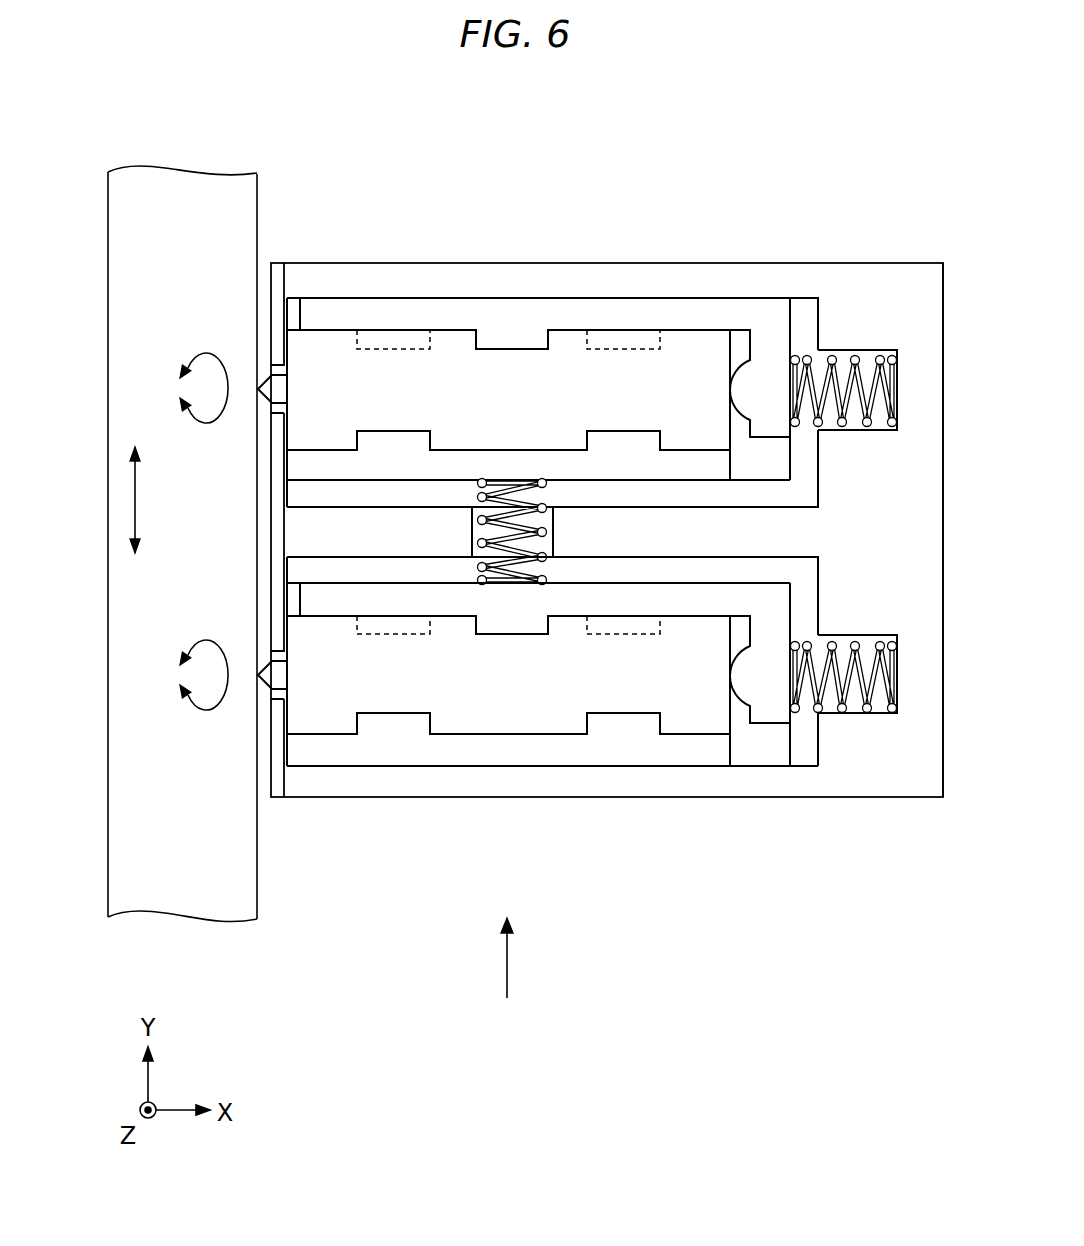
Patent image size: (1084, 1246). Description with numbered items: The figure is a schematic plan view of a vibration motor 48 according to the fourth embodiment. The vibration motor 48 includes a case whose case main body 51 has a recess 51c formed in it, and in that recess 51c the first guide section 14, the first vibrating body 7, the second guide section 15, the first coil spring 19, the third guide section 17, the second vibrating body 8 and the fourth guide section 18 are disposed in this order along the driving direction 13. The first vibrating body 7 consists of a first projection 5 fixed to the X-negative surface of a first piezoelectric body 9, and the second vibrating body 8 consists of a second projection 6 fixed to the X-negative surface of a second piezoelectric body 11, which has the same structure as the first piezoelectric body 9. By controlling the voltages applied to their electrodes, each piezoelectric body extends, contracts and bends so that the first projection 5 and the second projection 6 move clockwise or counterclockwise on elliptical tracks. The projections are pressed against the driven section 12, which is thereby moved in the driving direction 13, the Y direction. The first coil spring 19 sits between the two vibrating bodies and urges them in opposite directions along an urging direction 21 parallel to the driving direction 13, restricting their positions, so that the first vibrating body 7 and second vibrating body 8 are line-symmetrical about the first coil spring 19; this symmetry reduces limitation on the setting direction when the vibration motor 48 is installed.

The first projection 5 is at (273, 386).
The second projection 6 is at (273, 688).
The first vibrating body 7 is at (338, 172).
The second vibrating body 8 is at (345, 900).
The first piezoelectric body 9 is at (328, 340).
The second piezoelectric body 11 is at (328, 726).
The driven section 12 is at (122, 207).
The driving direction 13 is at (122, 498).
The first guide section 14 is at (690, 312).
The second guide section 15 is at (508, 458).
The third guide section 17 is at (690, 596).
The fourth guide section 18 is at (688, 755).
The first coil spring 19 is at (500, 542).
The urging direction 21 is at (510, 962).
The vibration motor 48 is at (903, 145).
The recess 51c is at (780, 755).
The case main body 51 is at (907, 777).